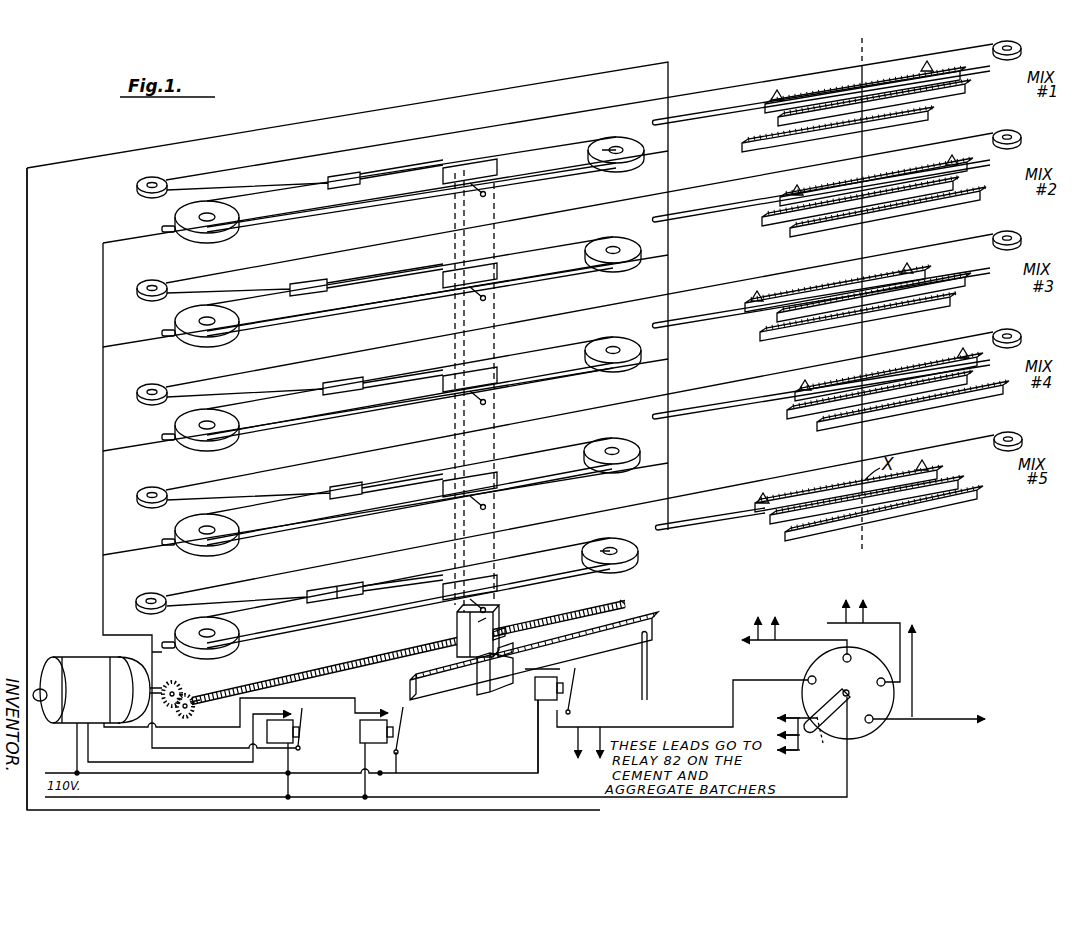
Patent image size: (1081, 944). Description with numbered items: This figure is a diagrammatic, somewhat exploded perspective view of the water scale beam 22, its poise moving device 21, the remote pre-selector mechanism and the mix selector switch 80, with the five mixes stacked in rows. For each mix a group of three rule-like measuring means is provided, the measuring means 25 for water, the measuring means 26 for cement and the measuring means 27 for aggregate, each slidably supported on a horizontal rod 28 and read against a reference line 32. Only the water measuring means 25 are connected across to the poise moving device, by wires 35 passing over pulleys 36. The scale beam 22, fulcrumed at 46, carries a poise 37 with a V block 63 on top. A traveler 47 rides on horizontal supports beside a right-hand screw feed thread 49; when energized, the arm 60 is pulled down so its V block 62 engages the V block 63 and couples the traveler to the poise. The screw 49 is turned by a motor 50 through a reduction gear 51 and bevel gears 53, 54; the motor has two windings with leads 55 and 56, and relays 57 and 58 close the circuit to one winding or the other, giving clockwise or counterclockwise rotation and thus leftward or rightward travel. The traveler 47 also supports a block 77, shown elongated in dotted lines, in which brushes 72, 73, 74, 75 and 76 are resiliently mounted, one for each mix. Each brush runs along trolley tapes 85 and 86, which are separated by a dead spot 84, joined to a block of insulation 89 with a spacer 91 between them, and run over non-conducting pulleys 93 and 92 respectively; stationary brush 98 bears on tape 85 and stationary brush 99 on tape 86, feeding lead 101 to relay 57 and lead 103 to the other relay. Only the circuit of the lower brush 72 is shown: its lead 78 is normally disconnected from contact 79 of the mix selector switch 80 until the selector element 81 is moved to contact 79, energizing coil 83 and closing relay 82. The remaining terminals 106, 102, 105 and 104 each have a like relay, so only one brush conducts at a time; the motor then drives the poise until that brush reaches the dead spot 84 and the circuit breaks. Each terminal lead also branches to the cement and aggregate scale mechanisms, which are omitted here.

The poise moving device 21 is at (391, 651).
The scale beam 22 is at (626, 650).
The measuring means for water 25 is at (832, 100).
The measuring means for cement 26 is at (846, 110).
The measuring means for aggregate 27 is at (886, 118).
The rod 28 is at (712, 118).
The reference line 32 is at (865, 538).
The wires 35 is at (752, 86).
The pulleys 36 is at (146, 182).
The poise 37 is at (500, 678).
The fulcrum 46 is at (650, 655).
The traveler 47 is at (457, 632).
The screw feed thread 49 is at (601, 606).
The motor 50 is at (100, 698).
The reduction gear 51 is at (117, 655).
The bevel gear 53 is at (180, 690).
The bevel gear 54 is at (196, 712).
The lead 55 is at (92, 748).
The lead 56 is at (104, 727).
The relay 57 is at (285, 745).
The relay 58 is at (360, 735).
The arm 60 is at (482, 620).
The V block 62 is at (505, 638).
The V block 63 is at (512, 655).
The brush 72 is at (463, 604).
The brush 73 is at (492, 502).
The brush 74 is at (488, 401).
The brush 75 is at (488, 299).
The brush 76 is at (492, 197).
The block 77 is at (453, 320).
The lead 78 is at (500, 636).
The contact 79 is at (808, 683).
The mix selector switch 80 is at (878, 708).
The selector element 81 is at (828, 714).
The relay 82 is at (575, 688).
The coil 83 is at (547, 690).
The dead spot 84 is at (470, 187).
The trolley tape 85 is at (353, 210).
The trolley tape 86 is at (567, 174).
The block of insulation 89 is at (349, 176).
The spacer 91 is at (350, 184).
The pulley 92 is at (624, 158).
The pulley 93 is at (226, 222).
The brush 98 is at (170, 232).
The brush 99 is at (646, 154).
The lead 101 is at (103, 510).
The contact 102 is at (878, 721).
The lead 103 is at (27, 442).
The contact terminal 104 is at (851, 657).
The contact terminal 105 is at (885, 684).
The contact terminal 106 is at (824, 756).